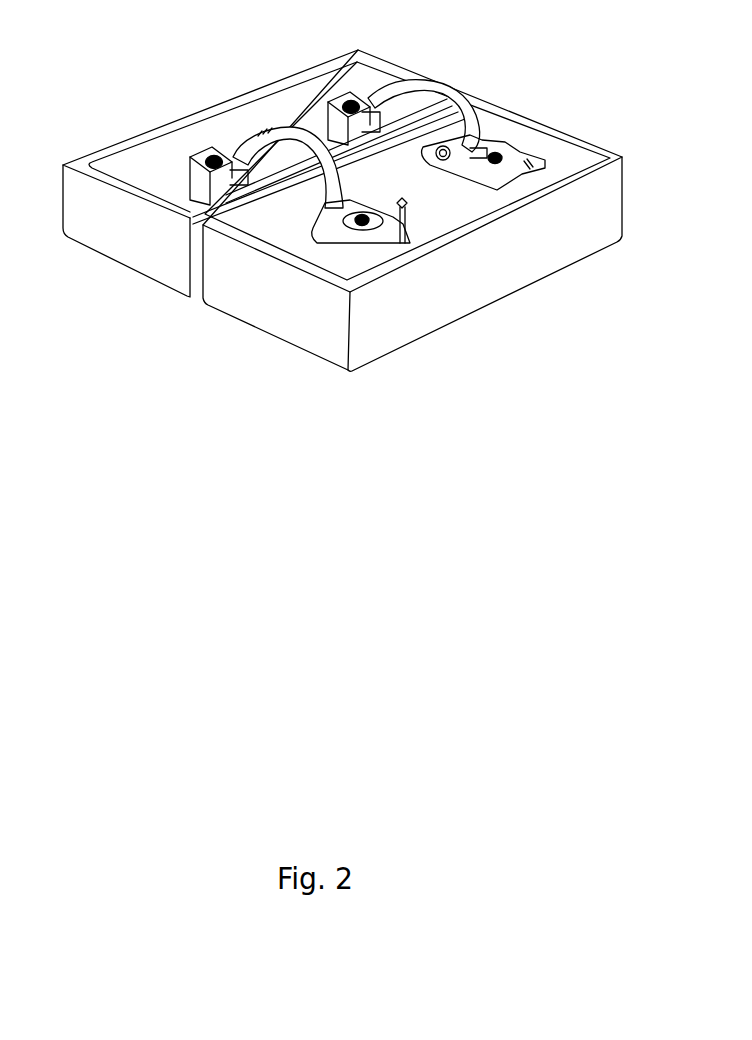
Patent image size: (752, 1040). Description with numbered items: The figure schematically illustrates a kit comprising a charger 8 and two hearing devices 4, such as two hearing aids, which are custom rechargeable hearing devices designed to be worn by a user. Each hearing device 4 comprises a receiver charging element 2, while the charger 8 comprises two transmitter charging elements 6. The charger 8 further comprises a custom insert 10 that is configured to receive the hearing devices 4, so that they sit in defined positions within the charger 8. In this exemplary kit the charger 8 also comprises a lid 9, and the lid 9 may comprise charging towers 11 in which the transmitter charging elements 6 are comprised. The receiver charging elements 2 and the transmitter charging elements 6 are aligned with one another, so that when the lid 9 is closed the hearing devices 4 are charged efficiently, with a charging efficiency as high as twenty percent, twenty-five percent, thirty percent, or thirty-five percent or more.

The receiver charging element 2 is at (508, 152).
The hearing device 4 is at (401, 247).
The transmitter charging element 6 is at (212, 158).
The charger 8 is at (368, 380).
The lid 9 is at (80, 158).
The custom insert 10 is at (450, 193).
The charging tower 11 is at (203, 183).